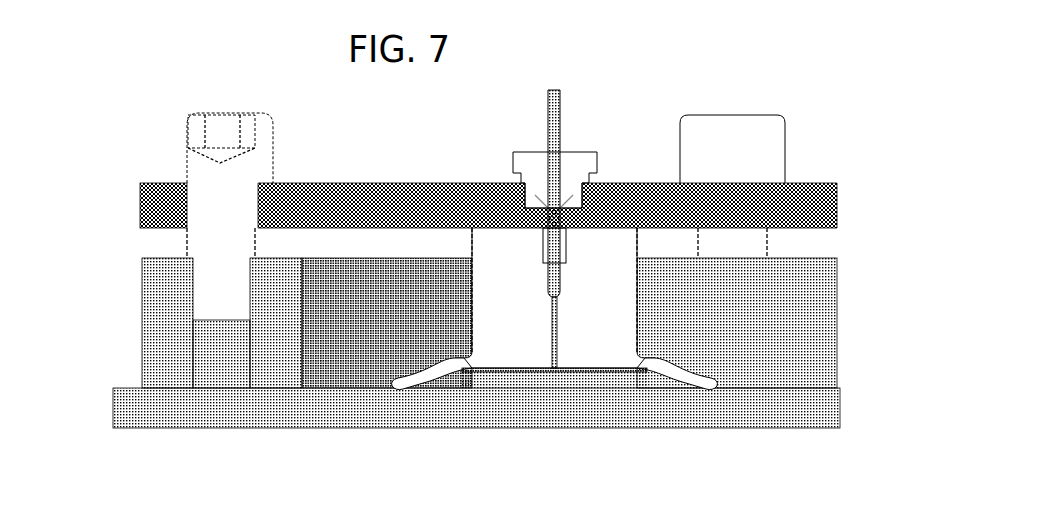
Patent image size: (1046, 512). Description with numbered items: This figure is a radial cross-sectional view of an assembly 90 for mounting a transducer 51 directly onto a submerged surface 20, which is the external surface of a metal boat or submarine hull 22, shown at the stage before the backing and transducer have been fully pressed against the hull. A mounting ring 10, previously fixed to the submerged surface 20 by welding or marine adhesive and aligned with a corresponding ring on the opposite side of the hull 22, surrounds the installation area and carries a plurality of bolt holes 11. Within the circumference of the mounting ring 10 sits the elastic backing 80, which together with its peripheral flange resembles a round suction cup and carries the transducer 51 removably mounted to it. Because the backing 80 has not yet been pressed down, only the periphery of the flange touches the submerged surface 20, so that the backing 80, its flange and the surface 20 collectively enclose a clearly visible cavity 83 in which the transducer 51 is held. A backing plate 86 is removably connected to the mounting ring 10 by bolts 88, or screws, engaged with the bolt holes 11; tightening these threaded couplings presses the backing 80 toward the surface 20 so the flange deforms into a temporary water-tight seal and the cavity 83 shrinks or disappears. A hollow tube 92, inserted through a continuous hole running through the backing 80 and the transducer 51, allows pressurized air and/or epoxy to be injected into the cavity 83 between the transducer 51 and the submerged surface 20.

The mounting ring 10 is at (155, 366).
The bolt holes 11 is at (193, 343).
The submerged surface 20 is at (370, 386).
The hull 22 is at (163, 410).
The transducer 51 is at (490, 368).
The backing 80 is at (498, 250).
The cavity 83 is at (680, 385).
The backing plate 86 is at (813, 197).
The bolts 88 is at (187, 157).
The assembly 90 is at (155, 165).
The tubing 92 is at (548, 115).